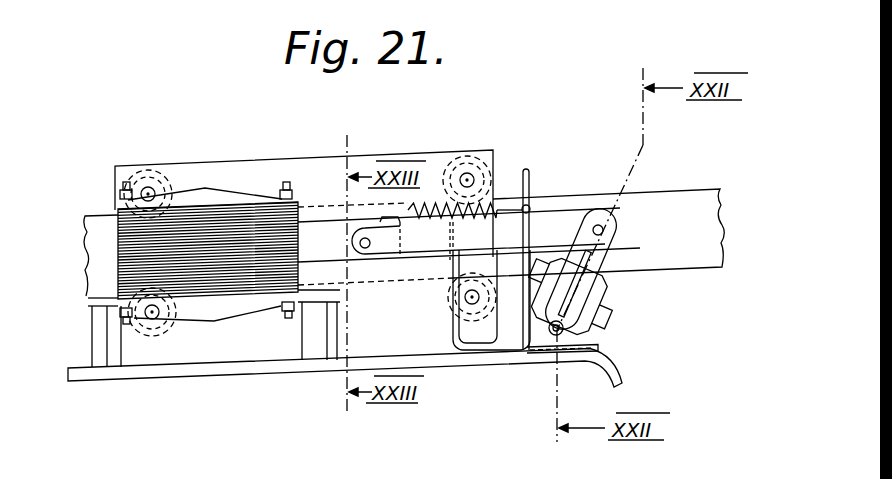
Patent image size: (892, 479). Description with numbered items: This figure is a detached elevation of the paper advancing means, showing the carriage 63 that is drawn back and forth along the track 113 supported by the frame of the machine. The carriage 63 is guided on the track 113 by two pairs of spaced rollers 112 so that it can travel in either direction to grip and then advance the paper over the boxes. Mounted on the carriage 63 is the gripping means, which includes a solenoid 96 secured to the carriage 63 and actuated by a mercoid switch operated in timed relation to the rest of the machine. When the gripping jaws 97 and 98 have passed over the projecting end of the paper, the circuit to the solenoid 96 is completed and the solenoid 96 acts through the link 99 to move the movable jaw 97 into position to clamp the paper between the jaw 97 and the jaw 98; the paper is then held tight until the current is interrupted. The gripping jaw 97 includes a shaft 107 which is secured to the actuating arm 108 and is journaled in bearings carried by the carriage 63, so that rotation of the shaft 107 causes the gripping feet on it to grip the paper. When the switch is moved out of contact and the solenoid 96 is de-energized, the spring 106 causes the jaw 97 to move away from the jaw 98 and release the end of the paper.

The carriage 63 is at (300, 162).
The solenoid 96 is at (248, 292).
The movable gripping jaw 97 is at (598, 347).
The gripping jaw 98 is at (622, 383).
The link 99 is at (545, 222).
The spring 106 is at (430, 224).
The shaft 107 is at (566, 328).
The actuating arm 108 is at (592, 289).
The spaced rollers 112 is at (166, 176).
The track 113 is at (683, 194).